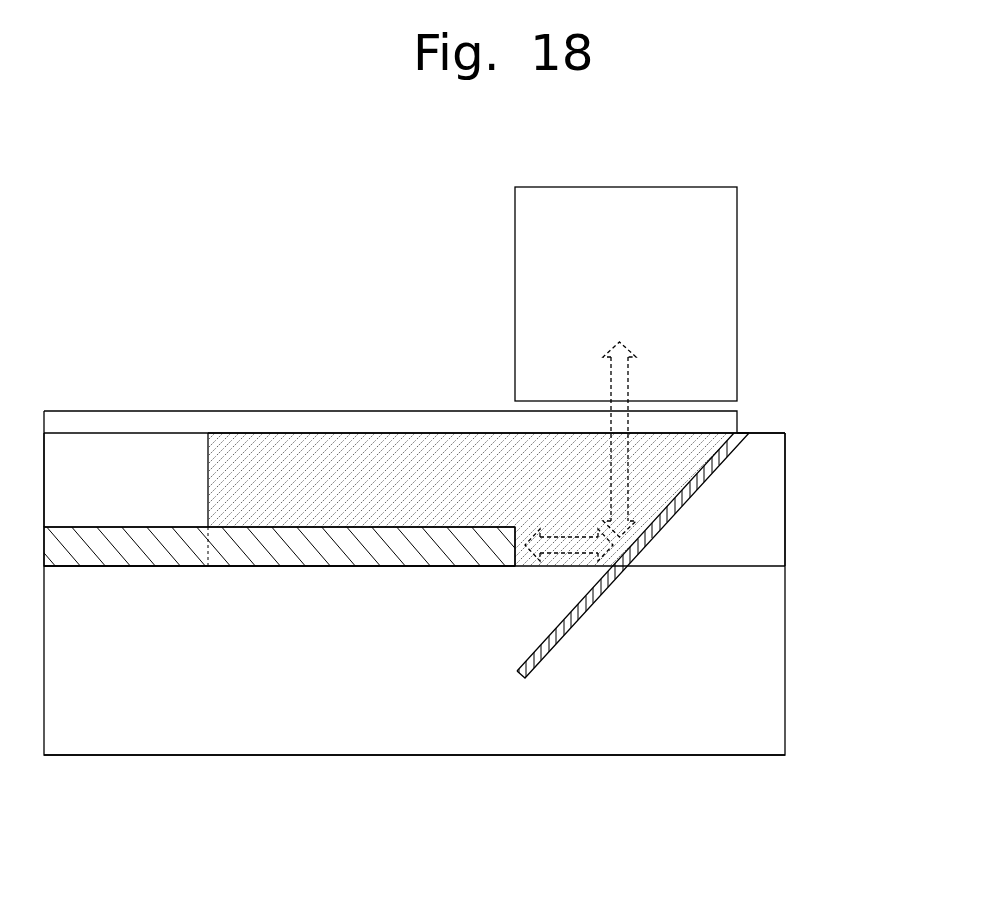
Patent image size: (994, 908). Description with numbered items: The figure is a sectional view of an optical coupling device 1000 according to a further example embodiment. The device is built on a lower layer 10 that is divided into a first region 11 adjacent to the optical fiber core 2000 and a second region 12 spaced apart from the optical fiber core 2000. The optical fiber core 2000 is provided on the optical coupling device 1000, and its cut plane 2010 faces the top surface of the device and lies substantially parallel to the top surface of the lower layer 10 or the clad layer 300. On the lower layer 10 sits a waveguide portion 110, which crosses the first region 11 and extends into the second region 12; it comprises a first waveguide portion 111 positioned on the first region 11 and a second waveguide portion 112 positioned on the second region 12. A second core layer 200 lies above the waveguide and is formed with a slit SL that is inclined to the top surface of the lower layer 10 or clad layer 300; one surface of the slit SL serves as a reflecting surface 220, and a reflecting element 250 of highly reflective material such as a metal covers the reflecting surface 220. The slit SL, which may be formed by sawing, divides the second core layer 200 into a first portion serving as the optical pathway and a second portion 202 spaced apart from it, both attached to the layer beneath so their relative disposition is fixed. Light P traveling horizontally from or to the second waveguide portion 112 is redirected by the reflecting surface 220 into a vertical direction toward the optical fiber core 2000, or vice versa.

The optical coupling device 1000 is at (860, 435).
The optical fiber core 2000 is at (525, 271).
The cut plane 2010 is at (517, 408).
The clad layer 300 is at (142, 489).
The second core layer 200 is at (431, 489).
The reflecting surface 220 is at (676, 494).
The reflecting element 250 is at (578, 622).
The slit SL is at (607, 580).
The second portion 202 is at (773, 507).
The lower layer 10 is at (455, 688).
The waveguide portion 110 is at (300, 623).
The first waveguide portion 111 is at (146, 566).
The second waveguide portion 112 is at (276, 566).
The first region 11 is at (208, 768).
The second region 12 is at (785, 768).
The optical signal path P is at (630, 343).